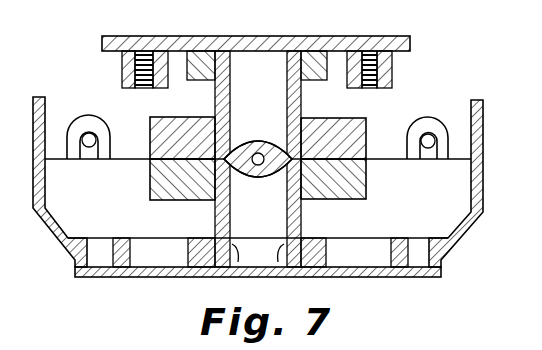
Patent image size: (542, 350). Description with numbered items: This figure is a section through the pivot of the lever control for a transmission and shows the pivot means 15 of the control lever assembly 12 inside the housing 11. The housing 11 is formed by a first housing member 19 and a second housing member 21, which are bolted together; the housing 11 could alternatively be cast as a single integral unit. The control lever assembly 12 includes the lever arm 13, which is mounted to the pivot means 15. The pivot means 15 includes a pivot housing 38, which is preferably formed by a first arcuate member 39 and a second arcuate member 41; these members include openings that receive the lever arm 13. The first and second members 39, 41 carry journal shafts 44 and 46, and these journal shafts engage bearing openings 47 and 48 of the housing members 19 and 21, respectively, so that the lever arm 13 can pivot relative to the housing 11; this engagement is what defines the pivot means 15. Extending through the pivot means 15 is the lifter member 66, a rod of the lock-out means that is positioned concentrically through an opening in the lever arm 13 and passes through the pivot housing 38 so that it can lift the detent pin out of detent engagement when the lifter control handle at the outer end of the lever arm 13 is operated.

The housing 11 is at (484, 138).
The control lever assembly 12 is at (254, 151).
The lever arm 13 is at (271, 177).
The pivot means 15 is at (200, 107).
The first housing member 19 is at (411, 44).
The second housing member 21 is at (480, 214).
The pivot housing 38 is at (165, 184).
The first arcuate member 39 is at (152, 135).
The second arcuate member 41 is at (367, 186).
The journal shaft 44 is at (295, 58).
The journal shaft 46 is at (281, 267).
The bearing opening 47 is at (233, 58).
The bearing opening 48 is at (236, 267).
The lifter member 66 is at (258, 157).